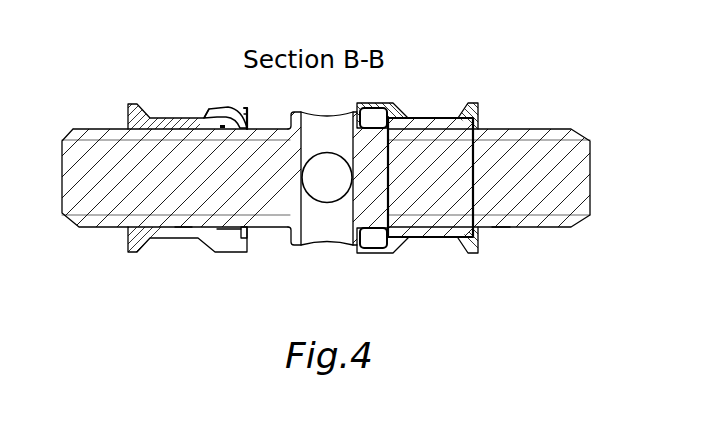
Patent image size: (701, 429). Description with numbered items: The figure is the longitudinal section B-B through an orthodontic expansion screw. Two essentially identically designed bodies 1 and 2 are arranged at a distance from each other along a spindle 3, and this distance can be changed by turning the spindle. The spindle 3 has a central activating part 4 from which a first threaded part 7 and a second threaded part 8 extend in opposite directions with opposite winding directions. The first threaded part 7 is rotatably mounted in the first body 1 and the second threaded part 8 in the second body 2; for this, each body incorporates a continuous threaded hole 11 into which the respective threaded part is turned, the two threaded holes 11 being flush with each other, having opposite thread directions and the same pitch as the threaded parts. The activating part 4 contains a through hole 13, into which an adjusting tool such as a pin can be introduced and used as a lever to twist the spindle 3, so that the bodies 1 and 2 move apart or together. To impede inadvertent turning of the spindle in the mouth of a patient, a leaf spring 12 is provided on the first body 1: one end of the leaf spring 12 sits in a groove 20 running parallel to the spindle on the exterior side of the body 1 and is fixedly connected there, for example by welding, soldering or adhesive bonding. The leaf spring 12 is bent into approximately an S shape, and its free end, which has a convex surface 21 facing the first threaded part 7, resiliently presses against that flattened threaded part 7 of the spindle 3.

The first body 1 is at (170, 123).
The second body 2 is at (465, 118).
The spindle 3 is at (565, 137).
The activating part 4 is at (338, 223).
The first threaded part 7 is at (108, 152).
The second threaded part 8 is at (542, 212).
The threaded hole 11 is at (183, 226).
The leaf spring 12 is at (225, 107).
The through hole 13 is at (333, 168).
The groove 20 is at (245, 108).
The convex surface 21 is at (245, 106).